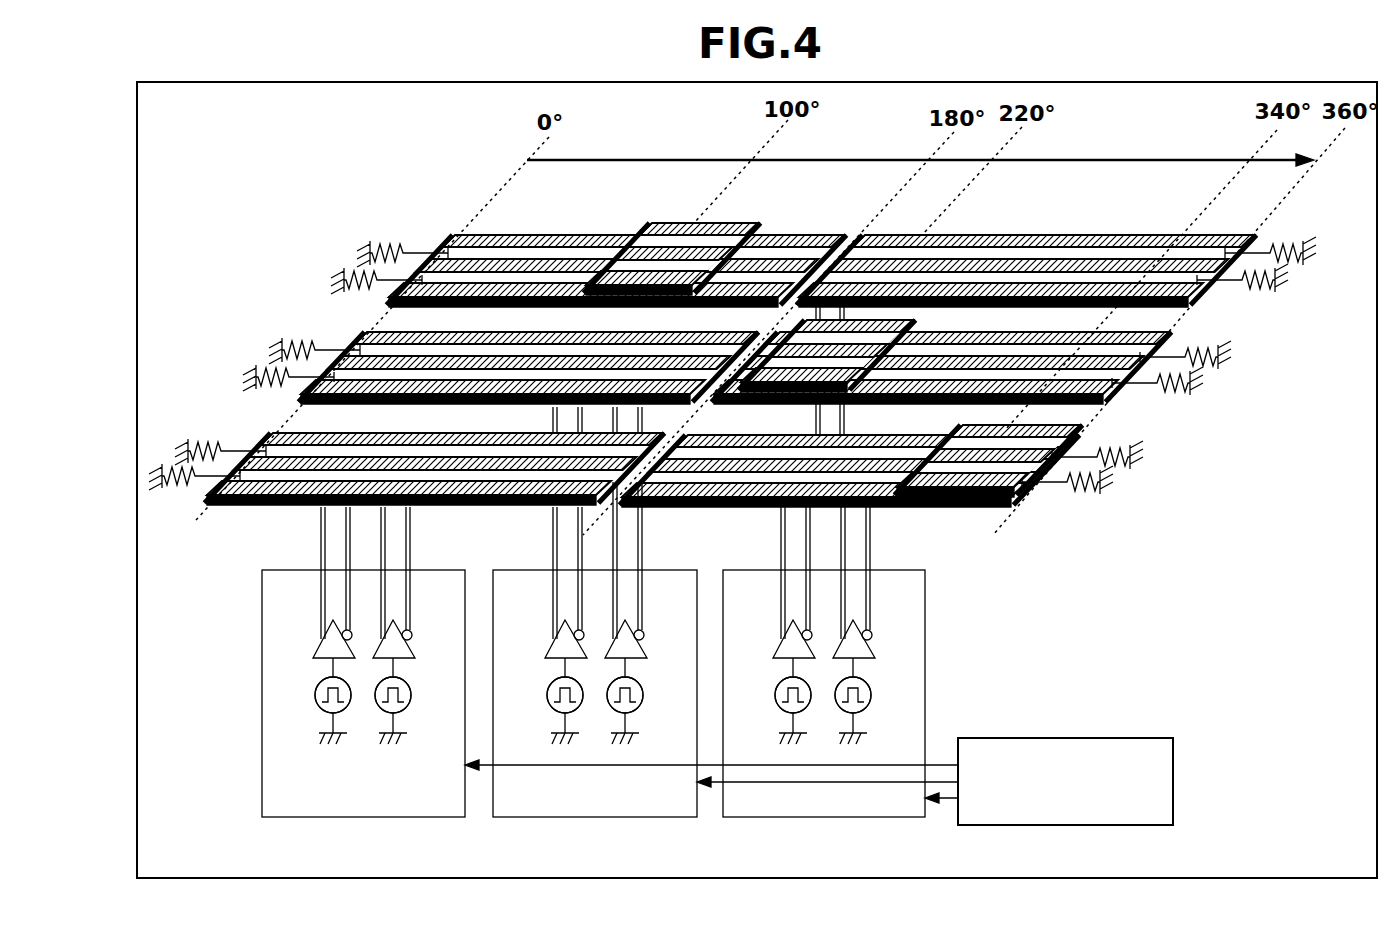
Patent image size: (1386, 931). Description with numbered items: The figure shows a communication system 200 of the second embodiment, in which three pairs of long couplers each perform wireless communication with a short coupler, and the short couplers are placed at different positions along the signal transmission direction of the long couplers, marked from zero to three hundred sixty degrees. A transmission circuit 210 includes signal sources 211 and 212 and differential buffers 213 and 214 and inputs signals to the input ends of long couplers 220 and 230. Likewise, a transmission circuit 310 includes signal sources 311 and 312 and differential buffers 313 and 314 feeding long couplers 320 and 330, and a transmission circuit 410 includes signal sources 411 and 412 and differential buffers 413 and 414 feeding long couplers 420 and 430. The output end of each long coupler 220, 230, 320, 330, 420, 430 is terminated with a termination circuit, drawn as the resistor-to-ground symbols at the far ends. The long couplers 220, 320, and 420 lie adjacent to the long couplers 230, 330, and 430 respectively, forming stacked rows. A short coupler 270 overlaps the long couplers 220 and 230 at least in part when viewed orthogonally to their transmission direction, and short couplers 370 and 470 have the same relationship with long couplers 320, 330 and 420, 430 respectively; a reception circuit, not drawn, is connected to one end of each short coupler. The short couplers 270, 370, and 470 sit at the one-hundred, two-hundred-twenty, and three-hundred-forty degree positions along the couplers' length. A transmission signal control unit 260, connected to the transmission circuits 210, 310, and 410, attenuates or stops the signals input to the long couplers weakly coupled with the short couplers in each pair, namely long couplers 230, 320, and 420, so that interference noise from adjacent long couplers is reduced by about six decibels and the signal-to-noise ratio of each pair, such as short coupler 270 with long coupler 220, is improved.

The communication system 200 is at (1233, 81).
The transmission circuit 210 is at (824, 721).
The signal source 211 is at (782, 710).
The signal source 212 is at (870, 710).
The differential buffer 213 is at (777, 647).
The differential buffer 214 is at (895, 632).
The long coupler 220 is at (452, 242).
The long coupler 230 is at (1190, 305).
The transmission signal control unit 260 is at (1068, 738).
The short coupler 270 is at (688, 232).
The transmission circuit 310 is at (595, 721).
The signal source 311 is at (554, 710).
The signal source 312 is at (642, 710).
The differential buffer 313 is at (549, 647).
The differential buffer 314 is at (667, 632).
The long coupler 320 is at (368, 335).
The long coupler 330 is at (1107, 403).
The short coupler 370 is at (803, 372).
The transmission circuit 410 is at (363, 721).
The signal source 411 is at (322, 710).
The signal source 412 is at (410, 710).
The differential buffer 413 is at (317, 647).
The differential buffer 414 is at (435, 632).
The long coupler 420 is at (267, 443).
The long coupler 430 is at (887, 492).
The short coupler 470 is at (1023, 497).